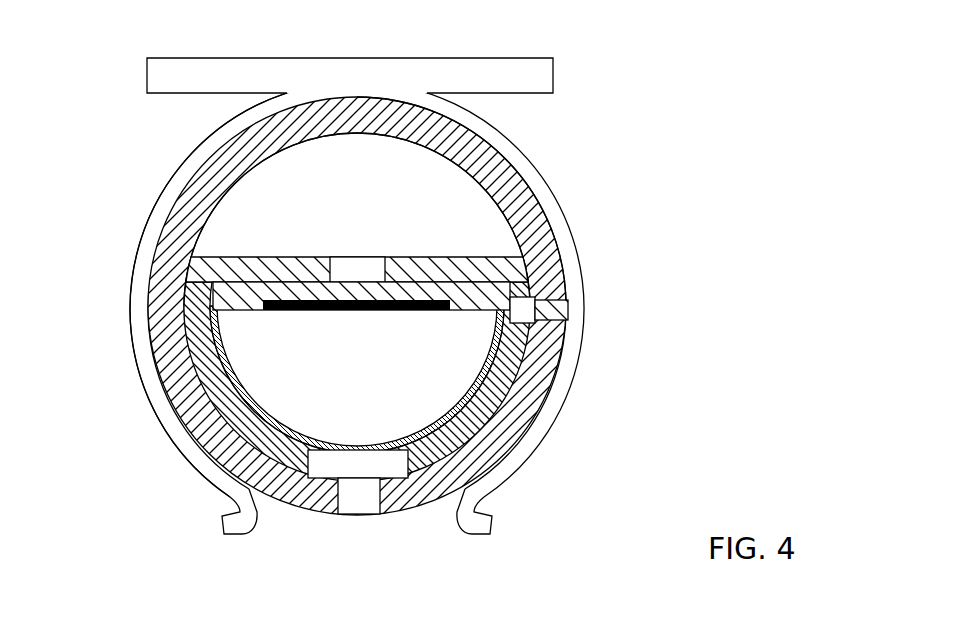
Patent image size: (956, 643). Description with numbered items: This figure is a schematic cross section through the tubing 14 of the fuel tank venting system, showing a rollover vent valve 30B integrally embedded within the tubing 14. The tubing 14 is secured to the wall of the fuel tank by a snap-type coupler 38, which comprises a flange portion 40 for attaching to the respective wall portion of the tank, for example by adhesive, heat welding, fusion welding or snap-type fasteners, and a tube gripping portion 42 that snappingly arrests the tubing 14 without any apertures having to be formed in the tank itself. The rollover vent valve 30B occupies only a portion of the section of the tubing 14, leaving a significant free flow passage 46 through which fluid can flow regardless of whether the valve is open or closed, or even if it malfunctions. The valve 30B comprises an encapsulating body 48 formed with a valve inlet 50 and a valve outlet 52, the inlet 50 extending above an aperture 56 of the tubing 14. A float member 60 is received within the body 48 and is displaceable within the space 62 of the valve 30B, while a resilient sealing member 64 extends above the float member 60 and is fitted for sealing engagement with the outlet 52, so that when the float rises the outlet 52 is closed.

The tubing 14 is at (277, 482).
The rollover vent valve 30B is at (466, 222).
The snap-type coupler 38 is at (130, 222).
The flange portion 40 is at (190, 65).
The tube gripping portion 42 is at (177, 433).
The free flow passage 46 is at (293, 207).
The encapsulating body 48 is at (483, 403).
The valve inlet 50 is at (328, 463).
The valve outlet 52 is at (352, 268).
The aperture 56 is at (362, 497).
The float member 60 is at (453, 352).
The space 62 is at (233, 296).
The resilient sealing member 64 is at (530, 262).